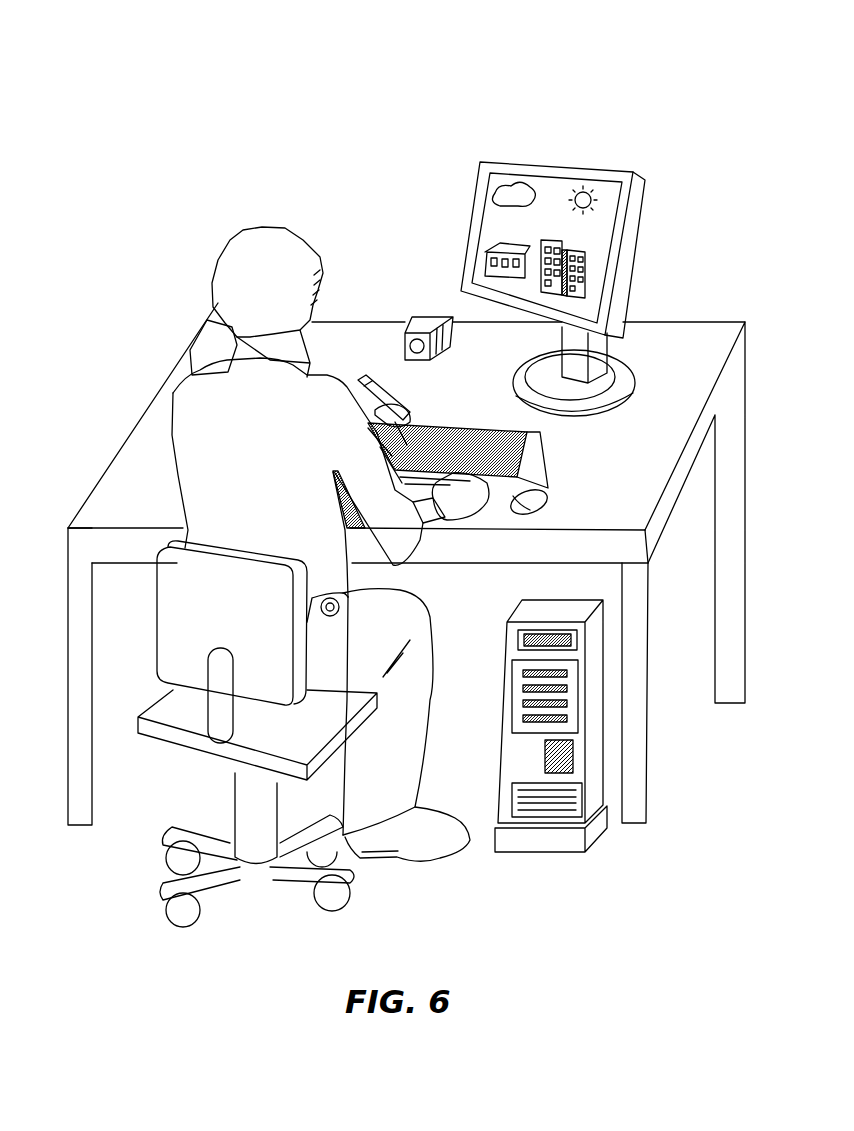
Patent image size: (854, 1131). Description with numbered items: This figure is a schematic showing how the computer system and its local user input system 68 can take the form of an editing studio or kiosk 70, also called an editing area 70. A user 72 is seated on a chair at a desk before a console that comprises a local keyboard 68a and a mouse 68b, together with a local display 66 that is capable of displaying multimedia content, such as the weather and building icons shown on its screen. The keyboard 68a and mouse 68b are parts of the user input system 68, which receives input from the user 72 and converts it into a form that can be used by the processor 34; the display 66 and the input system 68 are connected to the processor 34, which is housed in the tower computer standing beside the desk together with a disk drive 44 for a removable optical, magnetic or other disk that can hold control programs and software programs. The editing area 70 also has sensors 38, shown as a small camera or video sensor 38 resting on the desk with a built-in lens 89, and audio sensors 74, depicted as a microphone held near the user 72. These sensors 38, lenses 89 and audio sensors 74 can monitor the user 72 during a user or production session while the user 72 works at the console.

The editing studio or kiosk 70 is at (343, 92).
The local display 66 is at (580, 162).
The user input system 68 is at (680, 275).
The keyboard 68a is at (530, 443).
The mouse 68b is at (550, 505).
The sensors 38 is at (435, 317).
The built-in lenses 89 is at (403, 333).
The audio sensors 74 is at (365, 378).
The user 72 is at (203, 370).
The disk drive 44 is at (520, 638).
The processor 34 is at (547, 840).